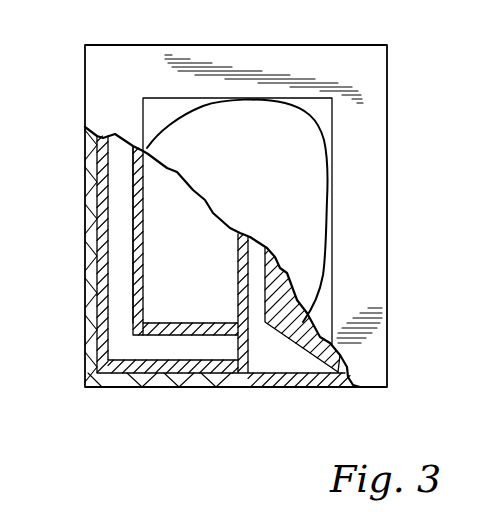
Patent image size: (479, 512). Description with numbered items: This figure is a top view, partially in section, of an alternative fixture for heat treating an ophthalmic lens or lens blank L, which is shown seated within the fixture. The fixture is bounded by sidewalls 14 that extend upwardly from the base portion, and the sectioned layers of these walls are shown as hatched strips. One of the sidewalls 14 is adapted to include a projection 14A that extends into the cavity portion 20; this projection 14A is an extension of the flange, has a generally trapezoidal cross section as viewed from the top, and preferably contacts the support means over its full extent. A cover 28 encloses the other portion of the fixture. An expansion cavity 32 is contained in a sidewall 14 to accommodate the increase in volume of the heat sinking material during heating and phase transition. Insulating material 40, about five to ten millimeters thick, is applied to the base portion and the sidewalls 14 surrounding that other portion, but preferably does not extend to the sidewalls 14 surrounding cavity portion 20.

The lens or lens blank L is at (248, 118).
The sidewall 14 is at (100, 188).
The projection 14A is at (306, 335).
The cavity portion 20 is at (258, 363).
The cover 28 is at (177, 280).
The expansion cavity 32 is at (113, 278).
The insulating material 40 is at (90, 238).